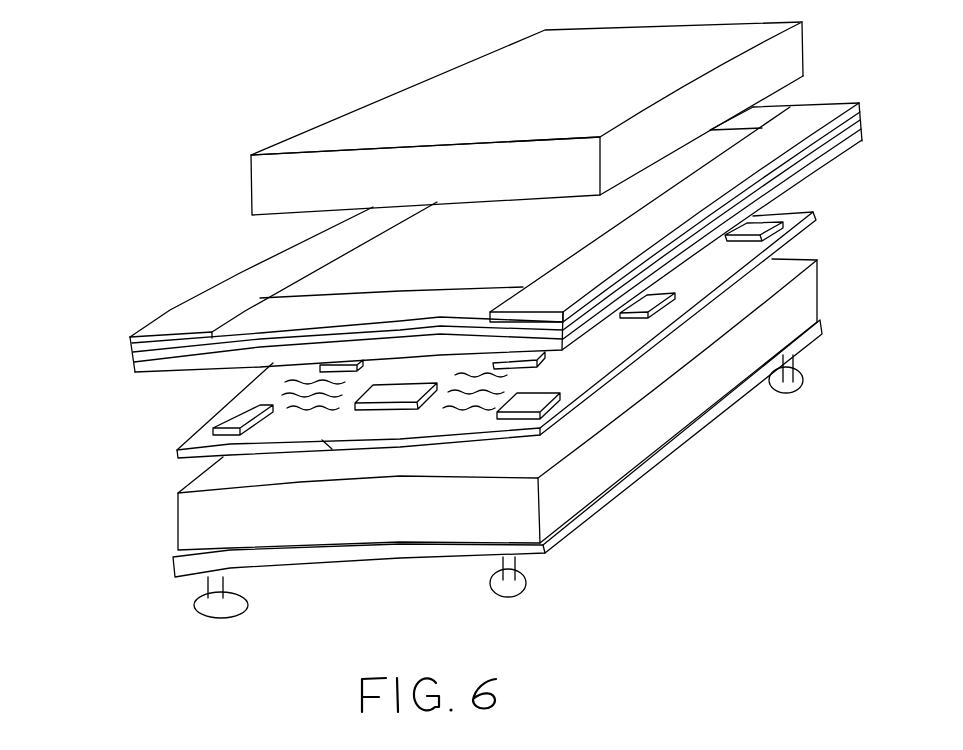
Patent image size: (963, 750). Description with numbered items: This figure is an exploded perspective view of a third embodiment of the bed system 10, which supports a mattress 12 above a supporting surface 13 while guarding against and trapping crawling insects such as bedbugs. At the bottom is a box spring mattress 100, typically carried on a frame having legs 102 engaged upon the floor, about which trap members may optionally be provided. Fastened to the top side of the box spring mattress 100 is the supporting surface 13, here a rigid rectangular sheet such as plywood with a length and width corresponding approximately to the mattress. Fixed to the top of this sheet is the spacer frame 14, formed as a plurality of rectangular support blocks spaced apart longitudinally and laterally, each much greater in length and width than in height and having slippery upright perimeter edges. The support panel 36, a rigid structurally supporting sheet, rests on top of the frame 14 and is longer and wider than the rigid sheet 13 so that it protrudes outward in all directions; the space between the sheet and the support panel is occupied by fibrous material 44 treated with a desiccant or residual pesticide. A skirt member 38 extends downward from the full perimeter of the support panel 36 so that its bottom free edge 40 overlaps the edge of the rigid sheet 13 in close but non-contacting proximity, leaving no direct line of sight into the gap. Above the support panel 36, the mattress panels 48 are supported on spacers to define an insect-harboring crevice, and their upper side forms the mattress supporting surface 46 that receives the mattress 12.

The bed system 10 is at (78, 312).
The mattress 12 is at (260, 187).
The supporting surface 13 is at (193, 439).
The spacer frame 14 is at (757, 241).
The support panel 36 is at (133, 350).
The skirt member 38 is at (133, 363).
The bottom free edge 40 is at (140, 372).
The fibrous material 44 is at (307, 403).
The mattress supporting surface 46 is at (345, 279).
The mattress panels 48 is at (217, 290).
The box spring mattress 100 is at (560, 488).
The legs 102 is at (530, 560).